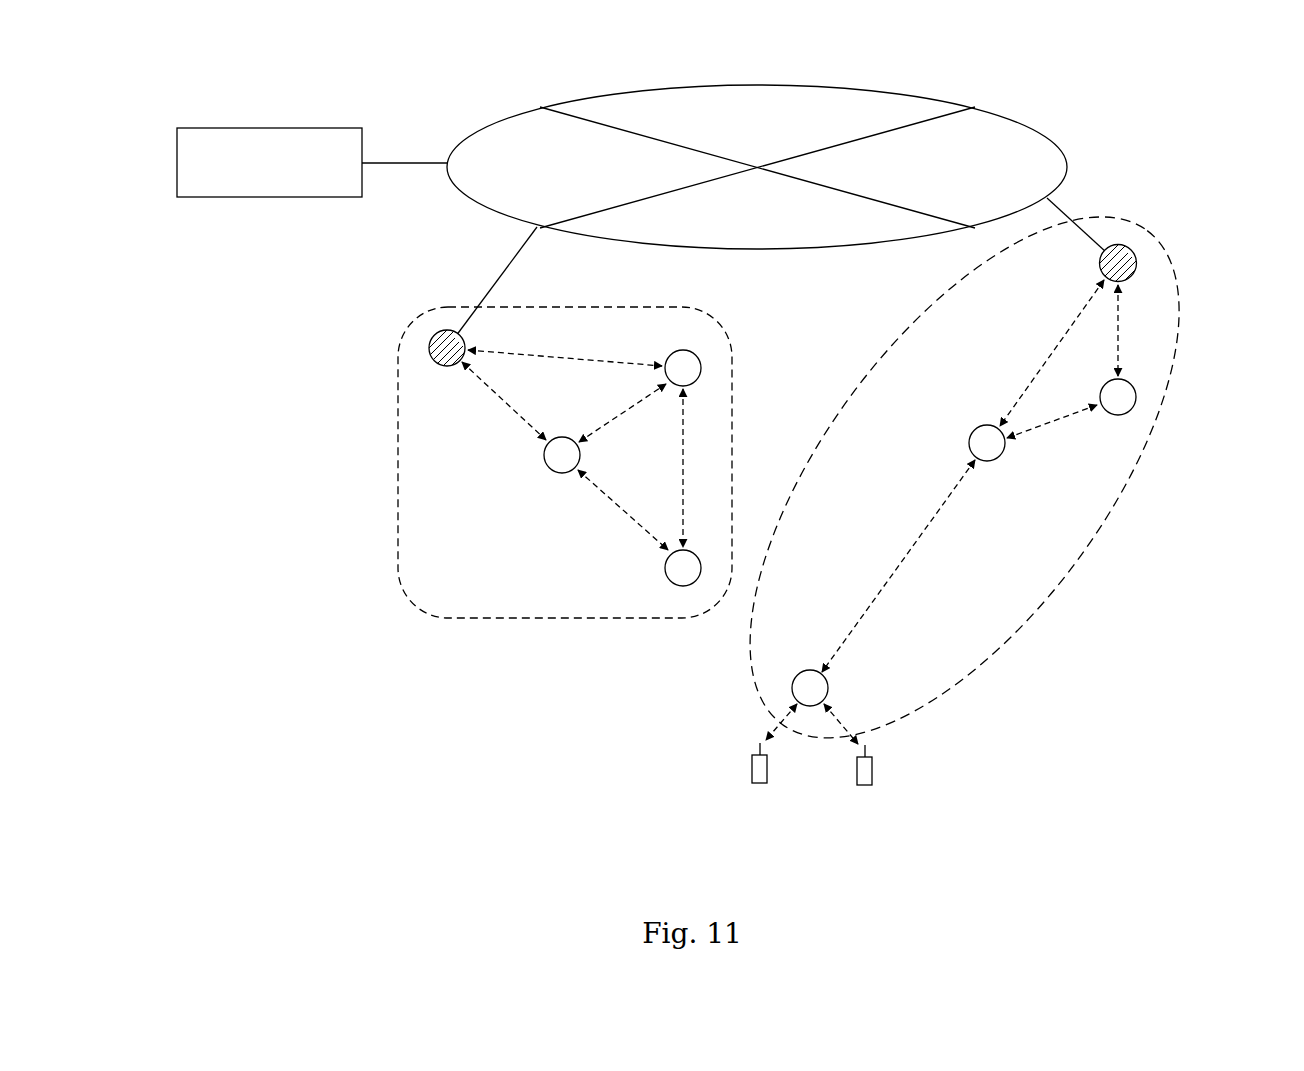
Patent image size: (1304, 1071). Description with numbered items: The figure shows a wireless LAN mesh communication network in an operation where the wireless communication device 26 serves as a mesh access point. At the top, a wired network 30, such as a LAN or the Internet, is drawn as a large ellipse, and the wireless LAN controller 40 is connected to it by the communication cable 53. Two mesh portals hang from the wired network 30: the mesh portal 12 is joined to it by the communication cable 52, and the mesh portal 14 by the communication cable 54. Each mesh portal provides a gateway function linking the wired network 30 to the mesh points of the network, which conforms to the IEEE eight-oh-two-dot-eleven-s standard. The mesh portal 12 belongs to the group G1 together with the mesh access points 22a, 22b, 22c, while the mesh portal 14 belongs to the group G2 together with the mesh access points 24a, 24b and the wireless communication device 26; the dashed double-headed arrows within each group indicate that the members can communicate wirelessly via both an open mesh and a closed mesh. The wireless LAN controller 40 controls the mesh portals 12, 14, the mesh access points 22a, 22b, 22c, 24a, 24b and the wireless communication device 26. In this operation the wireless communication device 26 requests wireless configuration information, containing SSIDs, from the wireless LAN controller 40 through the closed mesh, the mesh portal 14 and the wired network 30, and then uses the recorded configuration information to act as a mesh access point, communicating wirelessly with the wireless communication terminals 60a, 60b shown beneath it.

The wired network 30 is at (920, 97).
The wireless LAN controller 40 is at (272, 197).
The communication cable 53 is at (408, 160).
The communication cable 52 is at (496, 282).
The communication cable 54 is at (1057, 208).
The mesh portal 12 is at (430, 350).
The mesh portal 14 is at (1137, 268).
The mesh access point 22a is at (702, 368).
The mesh access point 22b is at (556, 473).
The mesh access point 22c is at (665, 574).
The mesh access point 24a is at (1137, 400).
The mesh access point 24b is at (1003, 455).
The wireless communication device 26 is at (829, 686).
The wireless communication terminal 60a is at (752, 783).
The wireless communication terminal 60b is at (868, 785).
The group G1 is at (733, 440).
The group G2 is at (1182, 343).